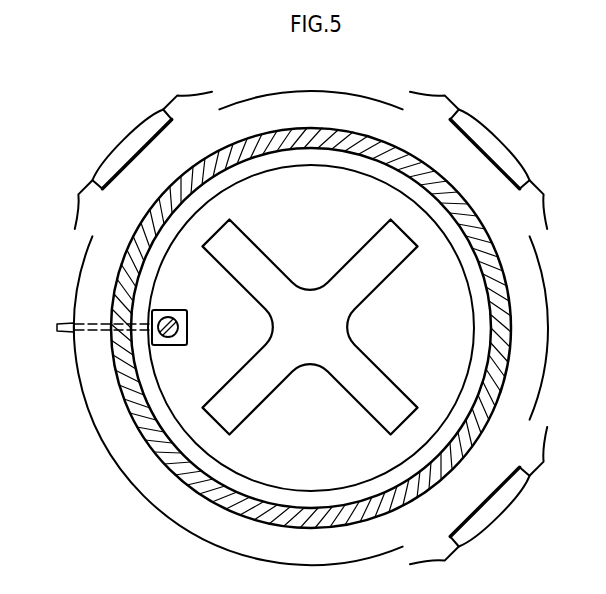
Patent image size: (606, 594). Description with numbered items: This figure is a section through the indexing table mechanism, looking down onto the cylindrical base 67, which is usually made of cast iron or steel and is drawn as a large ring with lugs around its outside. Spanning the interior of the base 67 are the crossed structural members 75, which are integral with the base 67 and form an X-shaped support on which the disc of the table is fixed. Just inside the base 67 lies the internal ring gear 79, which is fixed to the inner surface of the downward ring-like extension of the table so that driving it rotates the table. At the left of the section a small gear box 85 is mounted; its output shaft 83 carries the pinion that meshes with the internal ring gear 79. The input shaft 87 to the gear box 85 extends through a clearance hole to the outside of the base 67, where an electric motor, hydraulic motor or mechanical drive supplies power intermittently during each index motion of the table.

The cylindrical base 67 is at (503, 341).
The crossed structural members 75 is at (240, 236).
The internal ring gear 79 is at (480, 281).
The output shaft 83 is at (178, 327).
The gear box 85 is at (187, 345).
The input shaft 87 is at (60, 328).